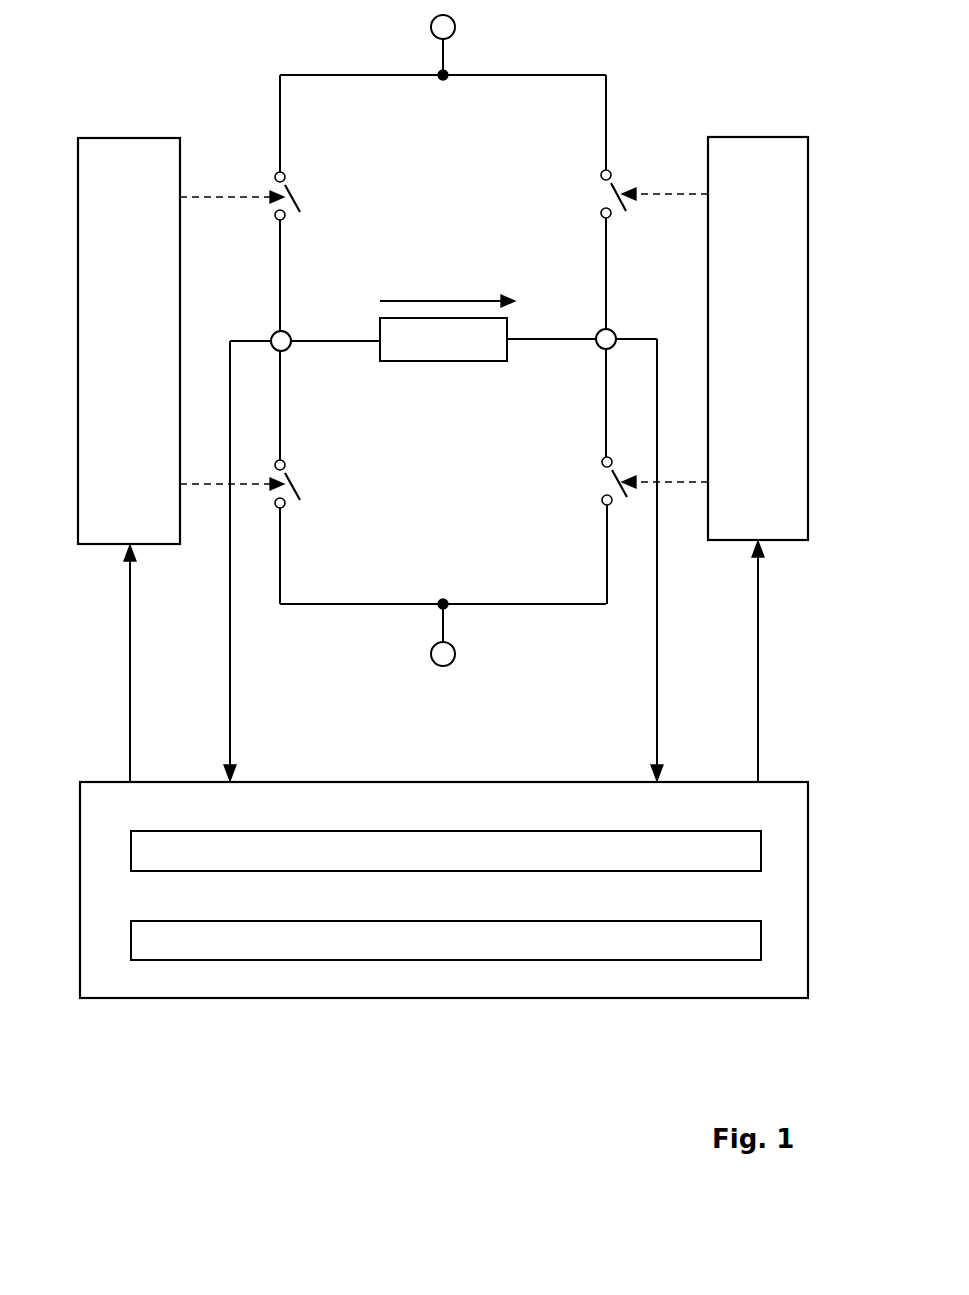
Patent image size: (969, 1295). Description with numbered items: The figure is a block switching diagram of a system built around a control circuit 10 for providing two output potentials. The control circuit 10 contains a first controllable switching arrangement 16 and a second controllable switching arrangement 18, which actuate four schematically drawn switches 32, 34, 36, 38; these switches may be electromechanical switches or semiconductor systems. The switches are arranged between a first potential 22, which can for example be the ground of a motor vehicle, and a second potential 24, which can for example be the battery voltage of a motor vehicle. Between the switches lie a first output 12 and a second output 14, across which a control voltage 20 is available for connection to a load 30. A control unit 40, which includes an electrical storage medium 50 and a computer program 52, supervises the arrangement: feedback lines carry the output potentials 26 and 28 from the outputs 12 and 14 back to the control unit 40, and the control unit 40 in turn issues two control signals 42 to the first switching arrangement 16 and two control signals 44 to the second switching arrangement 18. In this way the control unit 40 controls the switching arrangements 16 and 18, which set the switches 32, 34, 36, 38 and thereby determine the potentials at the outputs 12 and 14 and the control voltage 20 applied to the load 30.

The control circuit 10 is at (424, 1050).
The first output 12 is at (290, 333).
The second output 14 is at (598, 332).
The first controllable switching arrangement 16 is at (130, 138).
The second controllable switching arrangement 18 is at (757, 137).
The control voltage 20 is at (432, 300).
The first potential 22 is at (430, 654).
The second potential 24 is at (430, 27).
The feedback line of output potential 26 is at (232, 733).
The feedback line of output potential 28 is at (656, 733).
The load 30 is at (440, 364).
The switch 32 is at (297, 204).
The switch 34 is at (298, 493).
The switch 36 is at (615, 196).
The switch 38 is at (617, 483).
The control unit 40 is at (443, 781).
The control signals 42 is at (132, 646).
The control signals 44 is at (757, 645).
The electrical storage medium 50 is at (288, 831).
The computer program 52 is at (288, 921).